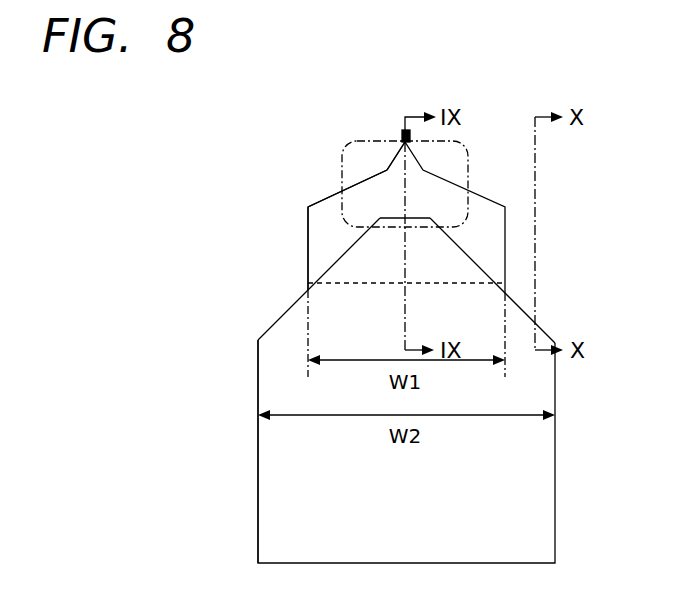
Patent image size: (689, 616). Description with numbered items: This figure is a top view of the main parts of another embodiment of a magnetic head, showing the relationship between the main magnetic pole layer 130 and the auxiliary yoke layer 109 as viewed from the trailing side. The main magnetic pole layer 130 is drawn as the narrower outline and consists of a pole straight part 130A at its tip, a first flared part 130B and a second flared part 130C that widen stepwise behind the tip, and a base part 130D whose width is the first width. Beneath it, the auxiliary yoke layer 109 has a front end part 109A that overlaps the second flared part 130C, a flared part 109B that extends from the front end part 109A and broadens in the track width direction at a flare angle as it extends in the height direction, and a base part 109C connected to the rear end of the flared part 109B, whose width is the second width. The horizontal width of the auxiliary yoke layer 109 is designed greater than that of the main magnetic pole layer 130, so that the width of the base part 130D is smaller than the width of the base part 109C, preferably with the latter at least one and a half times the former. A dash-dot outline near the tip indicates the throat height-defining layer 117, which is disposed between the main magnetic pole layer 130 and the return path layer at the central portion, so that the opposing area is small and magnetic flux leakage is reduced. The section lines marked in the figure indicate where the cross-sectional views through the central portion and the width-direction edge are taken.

The auxiliary yoke layer 109 is at (242, 437).
The front end part 109A is at (396, 220).
The flared part 109B is at (327, 272).
The base part 109C is at (258, 370).
The throat height-defining layer 117 is at (392, 139).
The main magnetic pole layer 130 is at (278, 204).
The pole straight part 130A is at (402, 137).
The first flared part 130B is at (393, 160).
The second flared part 130C is at (317, 201).
The base part 130D is at (308, 237).